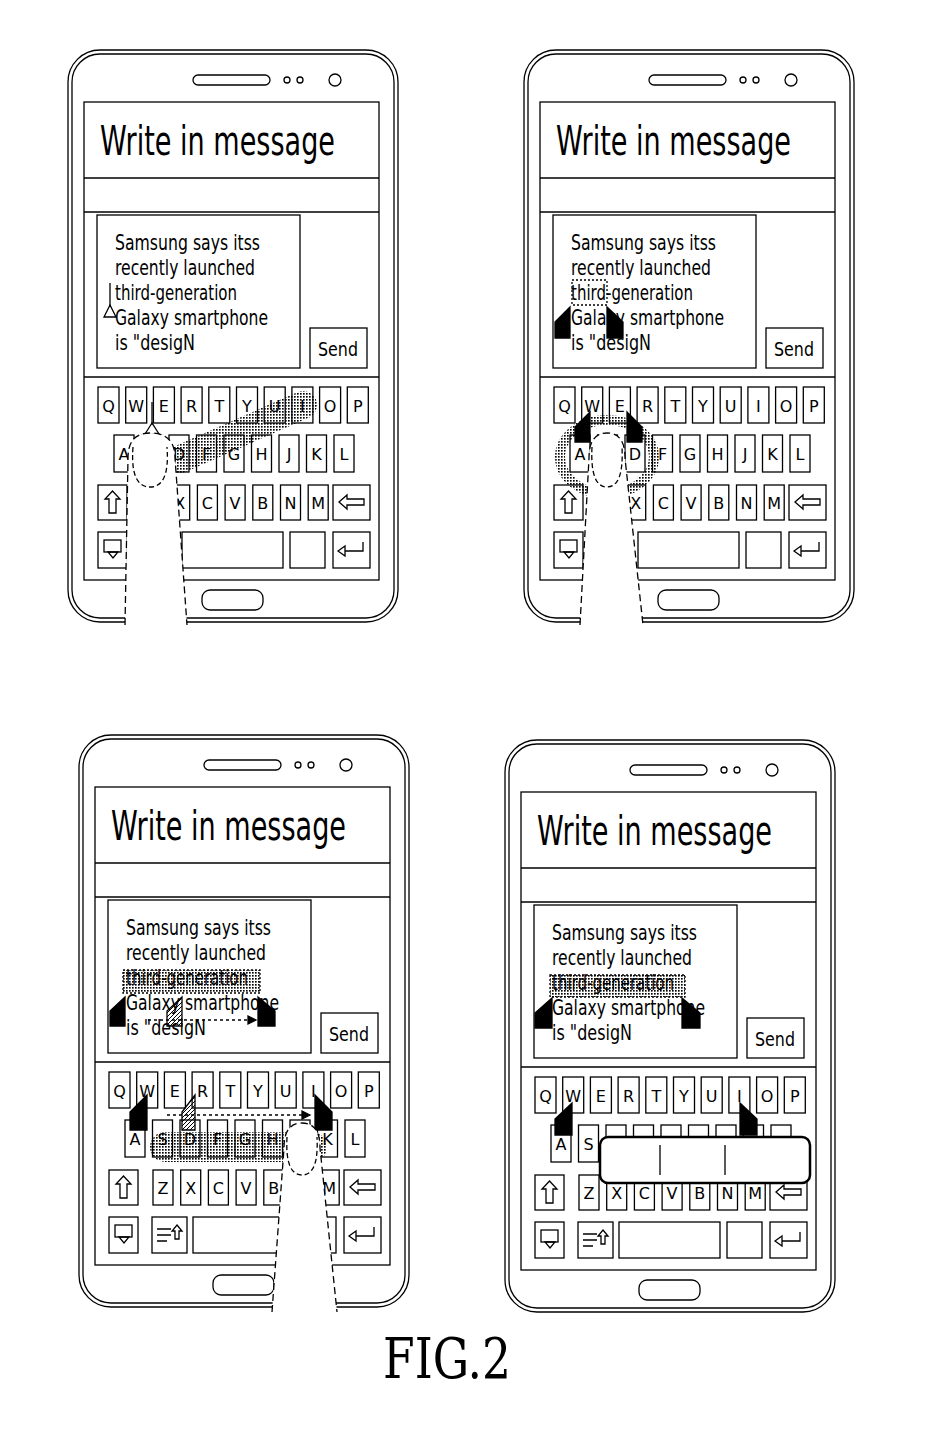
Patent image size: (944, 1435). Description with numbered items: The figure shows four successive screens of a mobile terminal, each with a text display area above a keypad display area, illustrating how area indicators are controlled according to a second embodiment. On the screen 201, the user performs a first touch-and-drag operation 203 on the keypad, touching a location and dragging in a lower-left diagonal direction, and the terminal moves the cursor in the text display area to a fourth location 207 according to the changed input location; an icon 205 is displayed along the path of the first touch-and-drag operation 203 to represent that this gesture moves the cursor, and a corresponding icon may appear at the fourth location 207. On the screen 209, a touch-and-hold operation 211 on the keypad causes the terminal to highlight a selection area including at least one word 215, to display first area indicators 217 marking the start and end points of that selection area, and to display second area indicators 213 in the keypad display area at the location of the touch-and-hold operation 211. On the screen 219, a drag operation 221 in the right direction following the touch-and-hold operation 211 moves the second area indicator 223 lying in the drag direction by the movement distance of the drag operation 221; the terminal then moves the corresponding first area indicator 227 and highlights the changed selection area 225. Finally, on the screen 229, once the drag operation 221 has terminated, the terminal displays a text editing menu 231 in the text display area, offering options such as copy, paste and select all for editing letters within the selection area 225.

The screen 201 is at (222, 50).
The first touch-and-drag operation 203 is at (312, 432).
The icon 205 is at (130, 430).
The fourth location 207 is at (108, 292).
The screen 209 is at (689, 50).
The touch-and-hold operation 211 is at (560, 462).
The second area indicators 213 is at (565, 440).
The selection area 215 is at (570, 290).
The first area indicators 217 is at (605, 330).
The screen 219 is at (242, 735).
The drag operation 221 is at (212, 1163).
The second area indicator 223 is at (146, 1129).
The selection area 225 is at (262, 970).
The first area indicator 227 is at (268, 998).
The screen 229 is at (669, 740).
The text editing menu 231 is at (812, 1158).